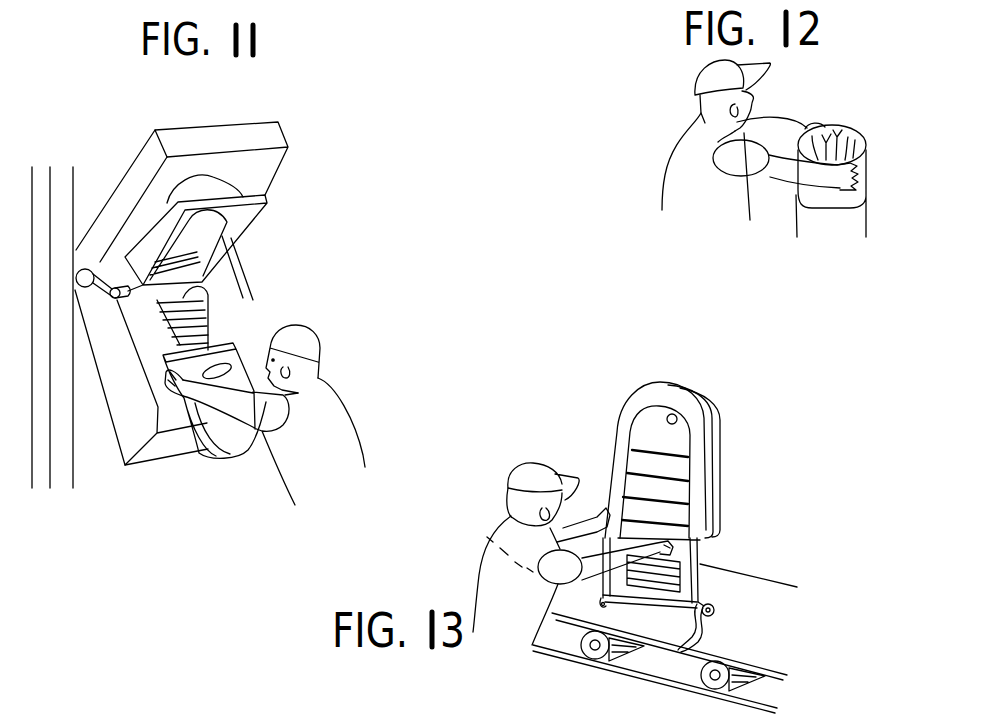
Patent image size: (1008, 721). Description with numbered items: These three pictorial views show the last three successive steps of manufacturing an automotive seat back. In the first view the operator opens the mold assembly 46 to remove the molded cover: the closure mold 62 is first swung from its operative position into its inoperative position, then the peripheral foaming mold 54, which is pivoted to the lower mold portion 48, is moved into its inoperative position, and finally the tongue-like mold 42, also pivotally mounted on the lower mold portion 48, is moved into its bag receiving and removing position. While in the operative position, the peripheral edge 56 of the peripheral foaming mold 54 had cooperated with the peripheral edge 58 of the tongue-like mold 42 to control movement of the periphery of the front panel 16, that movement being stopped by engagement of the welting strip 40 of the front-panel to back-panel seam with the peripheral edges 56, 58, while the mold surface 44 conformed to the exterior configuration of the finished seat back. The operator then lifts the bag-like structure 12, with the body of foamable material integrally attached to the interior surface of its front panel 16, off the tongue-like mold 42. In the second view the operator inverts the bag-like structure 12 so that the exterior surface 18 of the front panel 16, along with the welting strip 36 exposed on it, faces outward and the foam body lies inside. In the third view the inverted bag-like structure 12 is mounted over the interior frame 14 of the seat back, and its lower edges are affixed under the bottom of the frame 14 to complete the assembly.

In FIG. 11, the bag-like structure 12 is at (222, 460).
In FIG. 12, the bag-like structure 12 is at (873, 178).
In FIG. 13, the bag-like structure 12 is at (728, 425).
In FIG. 13, the interior frame 14 is at (702, 583).
In FIG. 13, the front panel 16 is at (698, 492).
In FIG. 13, the exterior surface 18 is at (645, 430).
In FIG. 13, the welting strip 36 is at (668, 411).
In FIG. 13, the welting strip 40 is at (639, 392).
In FIG. 11, the tongue-like mold 42 is at (153, 328).
In FIG. 11, the mold surface 44 is at (195, 298).
In FIG. 11, the mold assembly 46 is at (264, 115).
In FIG. 11, the lower mold portion 48 is at (161, 450).
In FIG. 11, the peripheral foaming mold 54 is at (243, 217).
In FIG. 11, the peripheral edge 56 is at (228, 241).
In FIG. 11, the peripheral edge 58 is at (228, 318).
In FIG. 11, the closure mold 62 is at (142, 165).